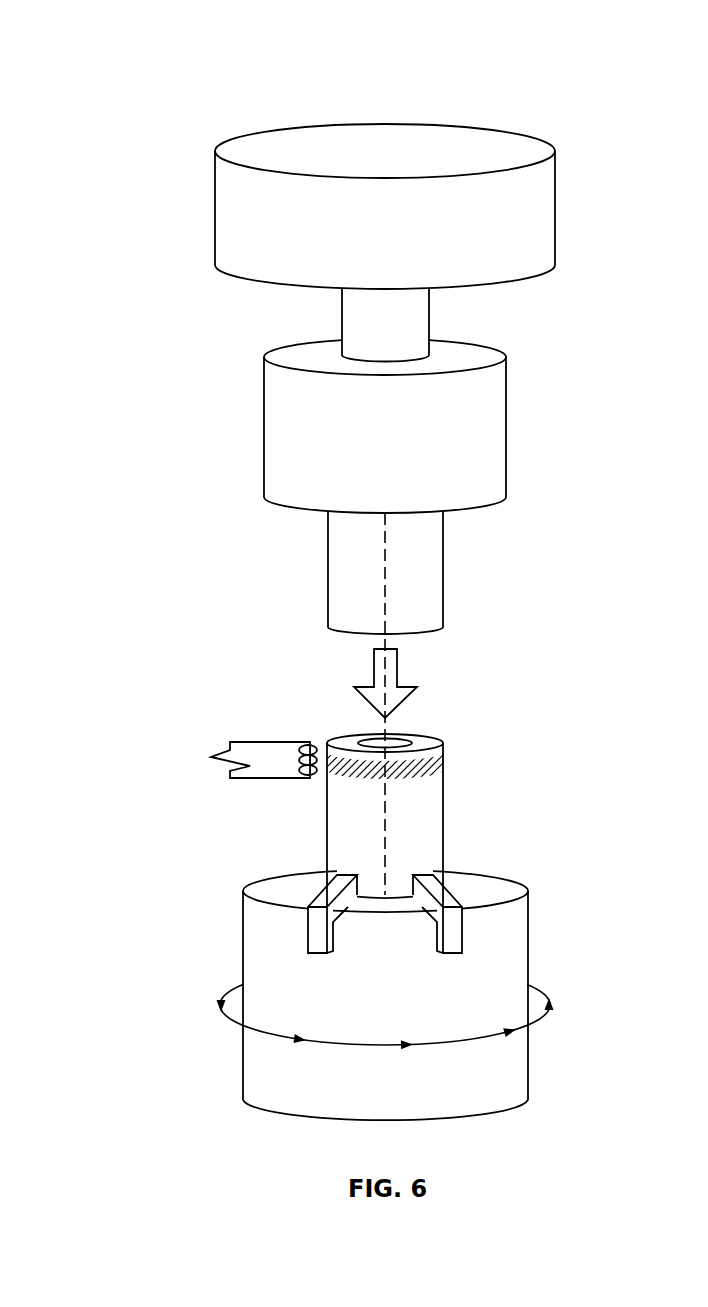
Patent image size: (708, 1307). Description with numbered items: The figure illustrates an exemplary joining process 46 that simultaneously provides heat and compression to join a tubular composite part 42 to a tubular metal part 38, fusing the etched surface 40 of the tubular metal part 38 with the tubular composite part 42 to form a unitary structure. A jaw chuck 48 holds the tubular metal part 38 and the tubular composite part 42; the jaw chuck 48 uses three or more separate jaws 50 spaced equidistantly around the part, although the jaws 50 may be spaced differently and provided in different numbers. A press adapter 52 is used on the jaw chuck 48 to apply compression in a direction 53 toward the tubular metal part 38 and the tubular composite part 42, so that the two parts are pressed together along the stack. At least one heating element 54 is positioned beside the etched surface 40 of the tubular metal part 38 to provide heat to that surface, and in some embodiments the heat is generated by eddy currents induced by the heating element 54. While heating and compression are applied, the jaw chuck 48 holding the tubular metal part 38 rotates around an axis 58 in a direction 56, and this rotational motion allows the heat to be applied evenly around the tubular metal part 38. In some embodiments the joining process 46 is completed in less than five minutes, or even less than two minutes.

The joining process 46 is at (86, 41).
The press adapter 52 is at (537, 200).
The jaw chuck 48 is at (490, 438).
The tubular composite part 42 is at (425, 587).
The direction 53 is at (372, 676).
The axis 58 is at (387, 728).
The heating element 54 is at (278, 742).
The etched surface 40 is at (437, 762).
The tubular metal part 38 is at (393, 817).
The separate jaws 50 is at (455, 918).
The direction 56 is at (220, 1003).